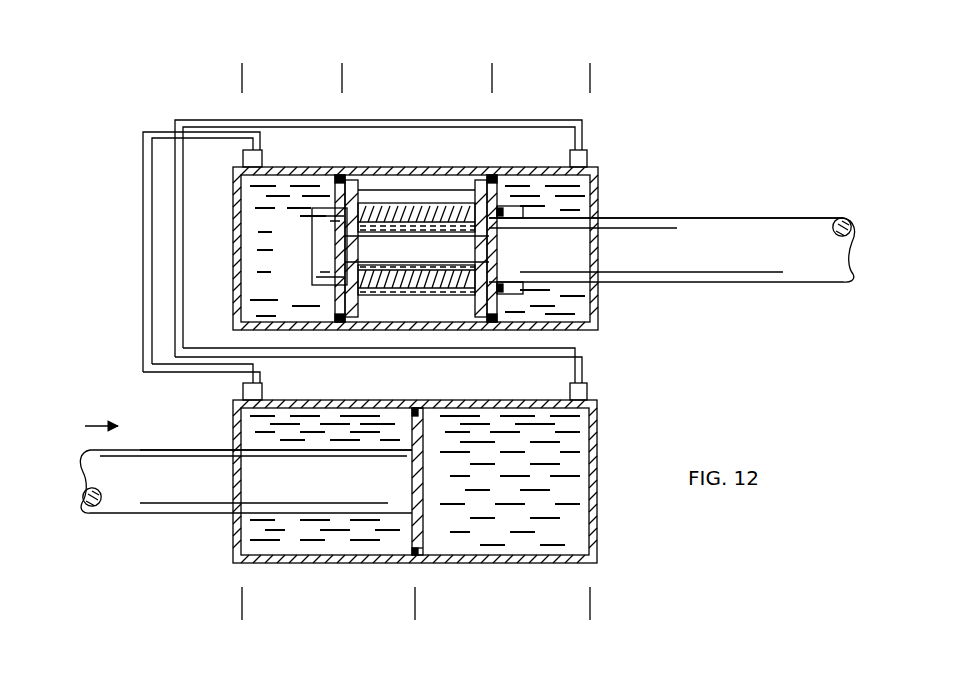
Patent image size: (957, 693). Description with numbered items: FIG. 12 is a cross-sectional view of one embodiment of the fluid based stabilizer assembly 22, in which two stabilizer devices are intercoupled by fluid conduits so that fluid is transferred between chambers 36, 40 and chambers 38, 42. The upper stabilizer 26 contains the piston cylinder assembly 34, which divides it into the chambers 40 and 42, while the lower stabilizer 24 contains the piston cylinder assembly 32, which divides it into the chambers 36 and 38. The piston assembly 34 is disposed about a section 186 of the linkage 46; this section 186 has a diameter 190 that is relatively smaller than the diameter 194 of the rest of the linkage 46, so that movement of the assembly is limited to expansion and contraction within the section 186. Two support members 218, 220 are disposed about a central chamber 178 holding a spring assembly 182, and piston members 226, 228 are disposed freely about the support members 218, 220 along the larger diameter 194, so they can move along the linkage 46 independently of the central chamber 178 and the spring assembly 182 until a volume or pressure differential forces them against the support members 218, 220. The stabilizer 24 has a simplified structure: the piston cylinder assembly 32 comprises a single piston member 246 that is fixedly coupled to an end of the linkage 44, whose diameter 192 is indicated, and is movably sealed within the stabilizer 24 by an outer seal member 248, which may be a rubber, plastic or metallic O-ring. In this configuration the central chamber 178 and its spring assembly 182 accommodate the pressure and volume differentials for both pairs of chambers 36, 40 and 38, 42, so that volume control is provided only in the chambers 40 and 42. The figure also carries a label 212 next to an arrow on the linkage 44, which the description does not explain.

The stabilizer assembly 22 is at (680, 126).
The stabilizer 24 is at (637, 431).
The stabilizer 26 is at (664, 343).
The piston cylinder assembly 32 is at (424, 381).
The piston cylinder assembly 34 is at (370, 201).
The chamber 36 is at (411, 603).
The chamber 38 is at (586, 603).
The chamber 40 is at (338, 77).
The chamber 42 is at (586, 77).
The linkage 44 is at (133, 515).
The linkage 46 is at (778, 218).
The central chamber 178 is at (395, 198).
The spring assembly 182 is at (397, 203).
The section 186 is at (488, 77).
The diameter 190 is at (312, 262).
The diameter 192 is at (183, 425).
The diameter 194 is at (727, 310).
The force direction 212 is at (102, 423).
The support member 218 is at (377, 183).
The support member 220 is at (455, 192).
The piston member 226 is at (335, 201).
The piston member 228 is at (500, 197).
The piston member 246 is at (420, 537).
The outer seal member 248 is at (418, 556).